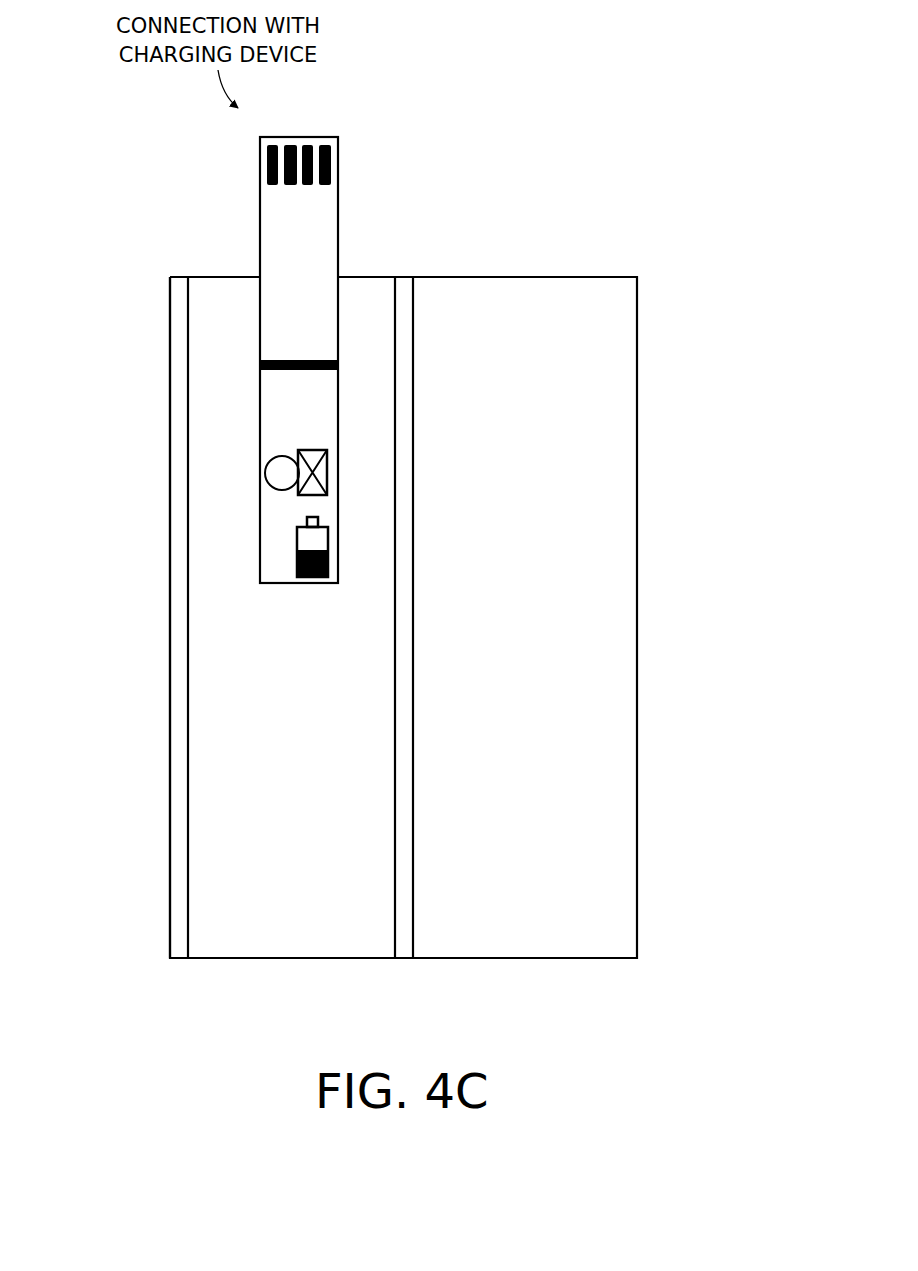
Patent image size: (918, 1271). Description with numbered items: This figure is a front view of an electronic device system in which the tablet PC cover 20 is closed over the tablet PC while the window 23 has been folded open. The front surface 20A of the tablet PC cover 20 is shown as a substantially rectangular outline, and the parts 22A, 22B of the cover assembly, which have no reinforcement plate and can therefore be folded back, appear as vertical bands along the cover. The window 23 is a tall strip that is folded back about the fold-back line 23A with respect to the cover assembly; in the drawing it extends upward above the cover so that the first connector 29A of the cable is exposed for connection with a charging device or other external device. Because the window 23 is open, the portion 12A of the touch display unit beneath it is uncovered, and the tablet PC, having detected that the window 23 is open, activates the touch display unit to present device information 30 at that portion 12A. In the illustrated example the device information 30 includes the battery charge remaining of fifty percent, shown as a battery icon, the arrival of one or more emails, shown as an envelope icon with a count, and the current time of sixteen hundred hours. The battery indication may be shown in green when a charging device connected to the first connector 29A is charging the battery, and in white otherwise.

The tablet PC cover 20 is at (507, 200).
The front surface 20A is at (132, 278).
The part without the reinforcement plate 22A is at (403, 287).
The part without the reinforcement plate 22B is at (178, 288).
The window 23 is at (260, 167).
The fold-back line 23A is at (277, 360).
The first connector 29A is at (293, 145).
The portion of the touch display unit 12A is at (282, 502).
The device information 30 is at (320, 505).